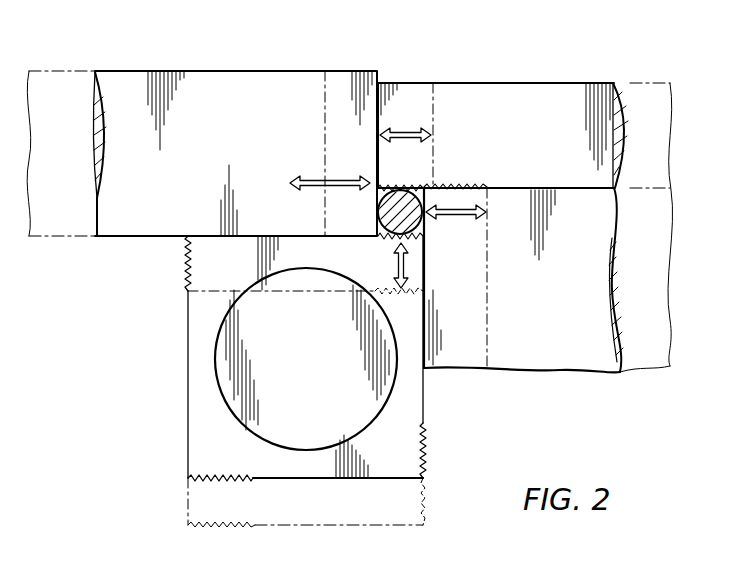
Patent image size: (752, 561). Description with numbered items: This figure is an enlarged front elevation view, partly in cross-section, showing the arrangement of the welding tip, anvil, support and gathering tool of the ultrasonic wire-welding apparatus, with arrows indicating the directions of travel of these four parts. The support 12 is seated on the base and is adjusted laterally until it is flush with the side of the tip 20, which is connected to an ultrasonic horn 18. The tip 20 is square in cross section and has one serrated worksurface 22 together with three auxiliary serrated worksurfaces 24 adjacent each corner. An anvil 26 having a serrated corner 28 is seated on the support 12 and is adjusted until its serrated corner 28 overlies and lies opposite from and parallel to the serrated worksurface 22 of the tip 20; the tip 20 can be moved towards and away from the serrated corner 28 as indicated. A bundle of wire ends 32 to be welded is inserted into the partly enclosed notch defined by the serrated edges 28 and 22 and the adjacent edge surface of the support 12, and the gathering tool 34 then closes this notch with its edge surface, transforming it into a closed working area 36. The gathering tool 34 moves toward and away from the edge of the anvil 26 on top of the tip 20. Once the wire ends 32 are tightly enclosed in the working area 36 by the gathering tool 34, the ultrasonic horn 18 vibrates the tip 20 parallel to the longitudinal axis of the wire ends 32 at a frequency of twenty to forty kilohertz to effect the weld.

The support 12 is at (582, 253).
The ultrasonic horn 18 is at (306, 358).
The tip 20 is at (395, 482).
The serrated worksurface 22 is at (364, 256).
The auxiliary serrated worksurfaces 24 is at (188, 262).
The anvil 26 is at (532, 88).
The serrated corner 28 is at (393, 191).
The wire ends 32 is at (420, 188).
The gathering tool 34 is at (258, 84).
The closed working area 36 is at (380, 196).